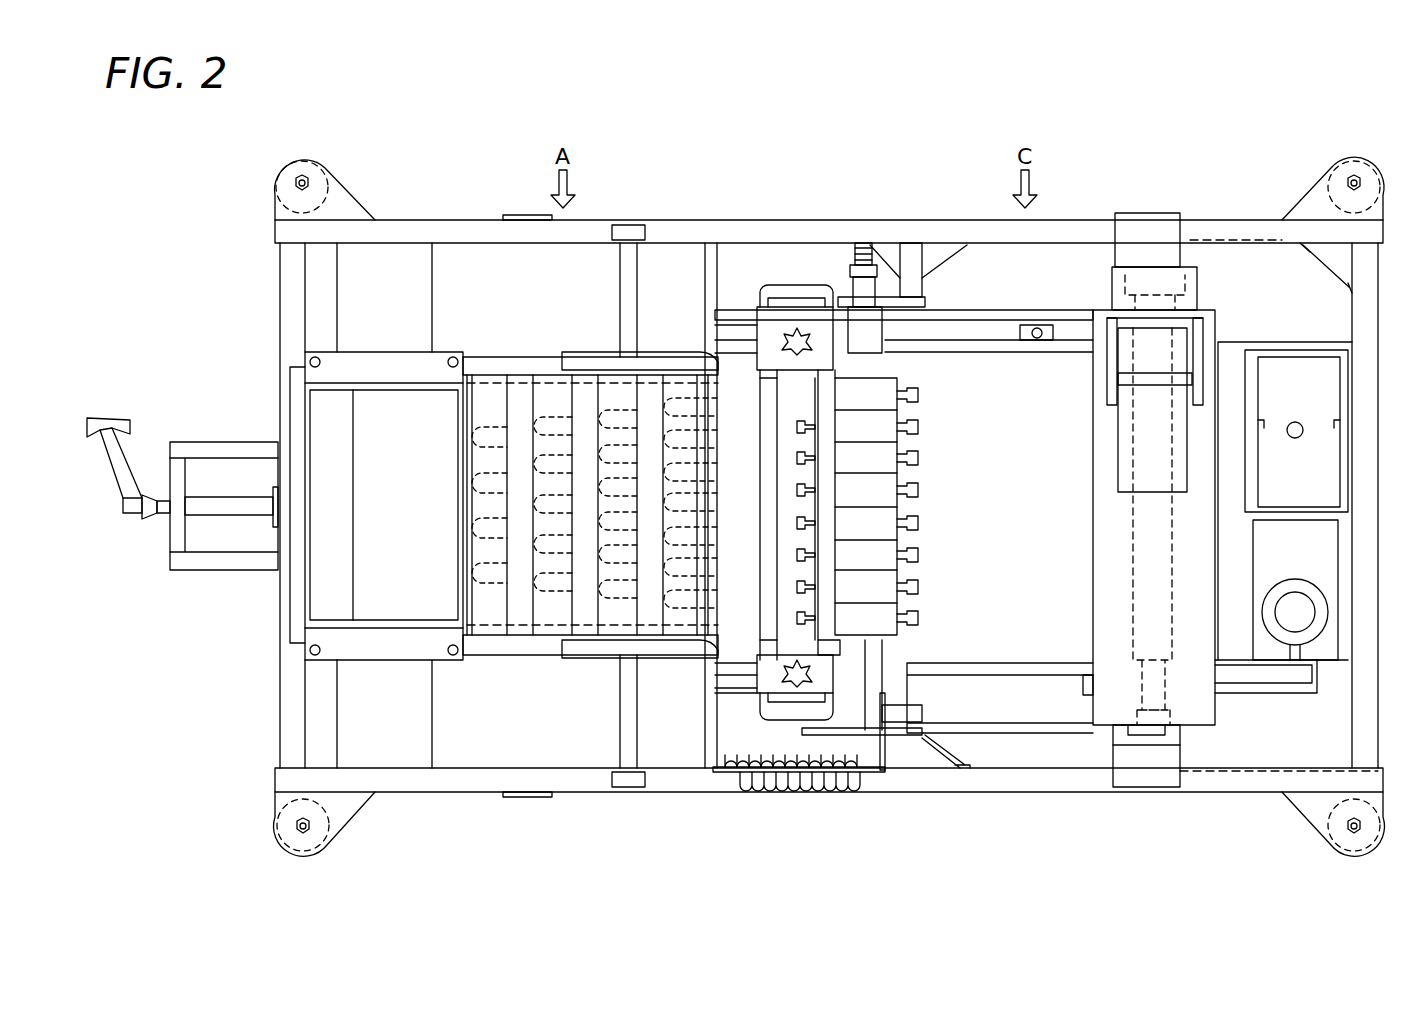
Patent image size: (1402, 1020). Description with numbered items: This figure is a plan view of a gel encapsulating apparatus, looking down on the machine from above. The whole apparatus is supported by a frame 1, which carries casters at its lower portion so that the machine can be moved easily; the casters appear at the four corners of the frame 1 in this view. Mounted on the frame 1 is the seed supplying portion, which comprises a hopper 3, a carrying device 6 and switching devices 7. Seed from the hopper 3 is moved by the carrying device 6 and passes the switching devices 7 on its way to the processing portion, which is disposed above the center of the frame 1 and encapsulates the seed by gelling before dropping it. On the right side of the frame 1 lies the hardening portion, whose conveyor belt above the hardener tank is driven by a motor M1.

The frame 1 is at (565, 778).
The hopper 3 is at (310, 420).
The carrying device 6 is at (527, 678).
The switching devices 7 is at (927, 532).
The motor M1 is at (1125, 437).